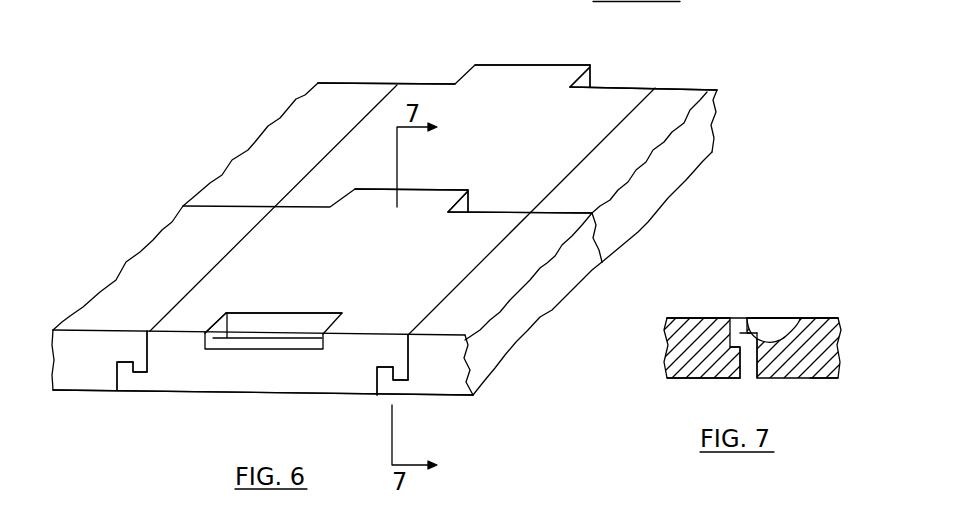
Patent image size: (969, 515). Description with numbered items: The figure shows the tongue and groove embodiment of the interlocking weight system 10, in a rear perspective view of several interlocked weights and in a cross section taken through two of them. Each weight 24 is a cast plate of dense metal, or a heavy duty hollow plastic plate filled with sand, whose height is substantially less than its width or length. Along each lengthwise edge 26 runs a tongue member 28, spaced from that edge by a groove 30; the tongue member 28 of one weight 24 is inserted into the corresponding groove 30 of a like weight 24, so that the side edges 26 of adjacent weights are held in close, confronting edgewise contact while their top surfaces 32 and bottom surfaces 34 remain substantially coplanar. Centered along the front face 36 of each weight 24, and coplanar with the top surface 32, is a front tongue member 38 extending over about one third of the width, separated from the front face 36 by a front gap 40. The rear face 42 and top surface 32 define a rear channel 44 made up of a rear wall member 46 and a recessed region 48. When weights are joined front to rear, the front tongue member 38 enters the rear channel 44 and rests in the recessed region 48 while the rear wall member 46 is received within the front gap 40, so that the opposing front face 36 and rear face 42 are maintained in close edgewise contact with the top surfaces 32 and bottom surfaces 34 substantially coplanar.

In FIG. 6, the interlocking weight system 10 is at (740, 105).
In FIG. 7, the interlocking weight system 10 is at (710, 252).
In FIG. 6, the weight 24 is at (423, 82).
In FIG. 7, the weight 24 is at (687, 378).
In FIG. 6, the lengthwise edge 26 is at (142, 343).
In FIG. 7, the lengthwise edge 26 is at (747, 379).
In FIG. 6, the tongue member 28 is at (122, 372).
In FIG. 6, the groove 30 is at (122, 365).
In FIG. 7, the top surface 32 is at (683, 318).
In FIG. 7, the bottom surface 34 is at (672, 380).
In FIG. 6, the front face 36 is at (622, 88).
In FIG. 6, the front tongue member 38 is at (505, 78).
In FIG. 7, the front tongue member 38 is at (718, 318).
In FIG. 7, the front gap 40 is at (727, 379).
In FIG. 6, the rear face 42 is at (467, 213).
In FIG. 6, the rear channel 44 is at (279, 313).
In FIG. 6, the rear wall member 46 is at (268, 342).
In FIG. 7, the rear wall member 46 is at (810, 318).
In FIG. 6, the recessed region 48 is at (303, 330).
In FIG. 7, the recessed region 48 is at (750, 318).